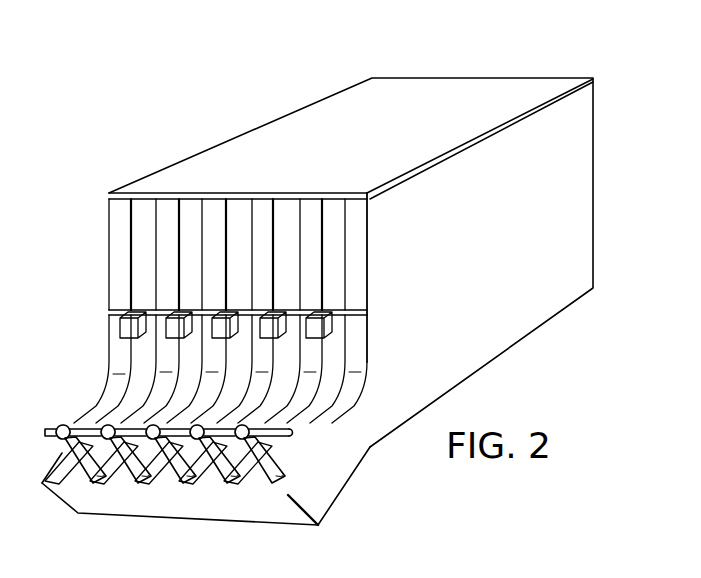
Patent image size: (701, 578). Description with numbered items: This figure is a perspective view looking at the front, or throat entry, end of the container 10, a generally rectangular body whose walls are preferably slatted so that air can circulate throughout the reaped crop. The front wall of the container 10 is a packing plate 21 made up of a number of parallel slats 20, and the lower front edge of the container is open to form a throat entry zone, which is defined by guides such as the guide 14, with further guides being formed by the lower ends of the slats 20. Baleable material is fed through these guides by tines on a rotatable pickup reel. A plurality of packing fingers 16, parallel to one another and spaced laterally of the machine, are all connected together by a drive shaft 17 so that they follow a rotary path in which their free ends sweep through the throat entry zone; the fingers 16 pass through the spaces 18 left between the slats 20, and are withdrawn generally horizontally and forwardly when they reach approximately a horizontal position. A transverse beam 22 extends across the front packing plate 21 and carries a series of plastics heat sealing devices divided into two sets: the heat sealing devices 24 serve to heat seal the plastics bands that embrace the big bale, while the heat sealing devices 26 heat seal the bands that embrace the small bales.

The container 10 is at (509, 72).
The guide 14 is at (352, 481).
The packing finger 16 is at (272, 462).
The drive shaft 17 is at (49, 430).
The space 18 is at (303, 413).
The slat 20 is at (356, 216).
The packing plate 21 is at (372, 250).
The transverse beam 22 is at (366, 318).
The heat sealing device 24 is at (140, 309).
The heat sealing device 26 is at (188, 309).